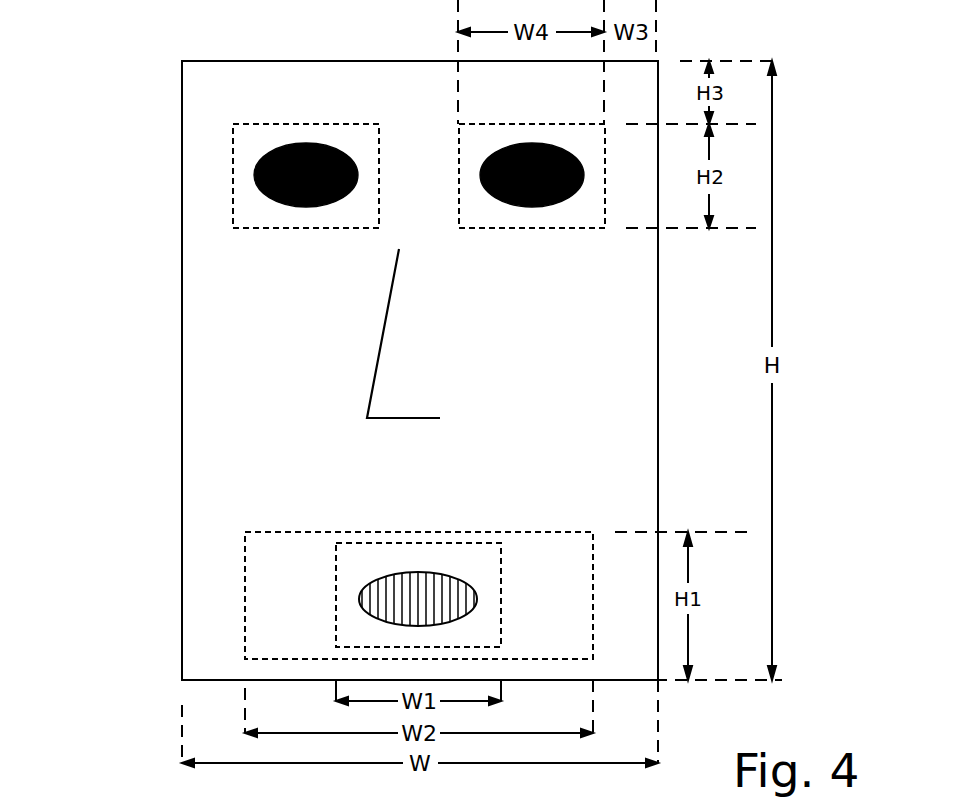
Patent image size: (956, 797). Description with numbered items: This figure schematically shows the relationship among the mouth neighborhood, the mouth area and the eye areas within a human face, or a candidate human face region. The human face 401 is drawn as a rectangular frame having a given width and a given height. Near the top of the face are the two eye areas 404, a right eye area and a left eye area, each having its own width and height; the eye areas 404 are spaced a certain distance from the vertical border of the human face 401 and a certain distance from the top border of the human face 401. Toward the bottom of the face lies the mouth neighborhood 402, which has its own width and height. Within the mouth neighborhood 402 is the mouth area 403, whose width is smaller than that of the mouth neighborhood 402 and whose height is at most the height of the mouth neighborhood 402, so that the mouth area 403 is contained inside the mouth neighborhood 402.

The human face 401 is at (213, 375).
The mouth neighborhood 402 is at (273, 627).
The mouth area 403 is at (358, 565).
The eye areas 404 is at (482, 208).